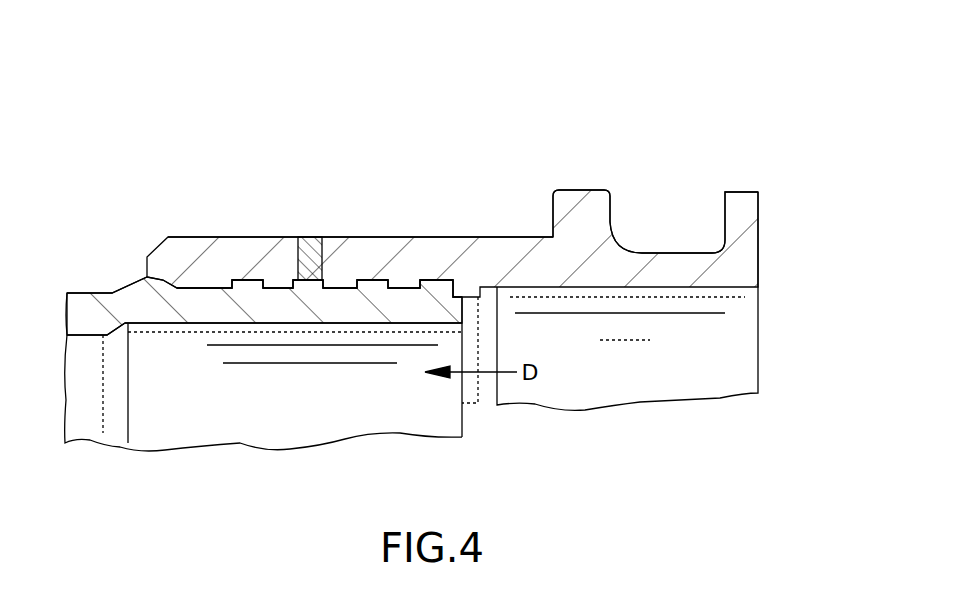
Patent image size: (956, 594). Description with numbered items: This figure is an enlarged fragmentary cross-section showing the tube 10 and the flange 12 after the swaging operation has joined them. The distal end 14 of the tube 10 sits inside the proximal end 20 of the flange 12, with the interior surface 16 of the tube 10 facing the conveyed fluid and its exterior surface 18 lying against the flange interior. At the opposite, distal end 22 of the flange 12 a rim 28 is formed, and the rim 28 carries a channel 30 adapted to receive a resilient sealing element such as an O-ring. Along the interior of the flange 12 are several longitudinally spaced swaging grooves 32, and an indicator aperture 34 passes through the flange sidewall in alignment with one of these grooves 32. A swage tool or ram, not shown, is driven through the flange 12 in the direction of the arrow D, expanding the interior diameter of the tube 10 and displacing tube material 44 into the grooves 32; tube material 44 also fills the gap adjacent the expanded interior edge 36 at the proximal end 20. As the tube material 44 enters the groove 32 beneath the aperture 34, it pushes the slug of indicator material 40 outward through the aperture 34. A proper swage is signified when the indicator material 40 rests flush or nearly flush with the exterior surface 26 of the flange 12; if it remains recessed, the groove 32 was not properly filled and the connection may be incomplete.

The tube 10 is at (114, 478).
The flange 12 is at (562, 120).
The distal end of the tube 14 is at (462, 427).
The interior surface of the tube 16 is at (142, 400).
The exterior surface of the tube 18 is at (83, 292).
The proximal end of the flange 20 is at (147, 257).
The distal end of the flange 22 is at (758, 362).
The exterior surface of the flange 26 is at (455, 237).
The rim 28 is at (585, 188).
The channel 30 is at (672, 253).
The swaging grooves 32 is at (247, 280).
The indicator aperture 34 is at (296, 198).
The expanded interior edge 36 is at (147, 278).
The indicator material 40 is at (308, 268).
The tube material 44 is at (150, 282).